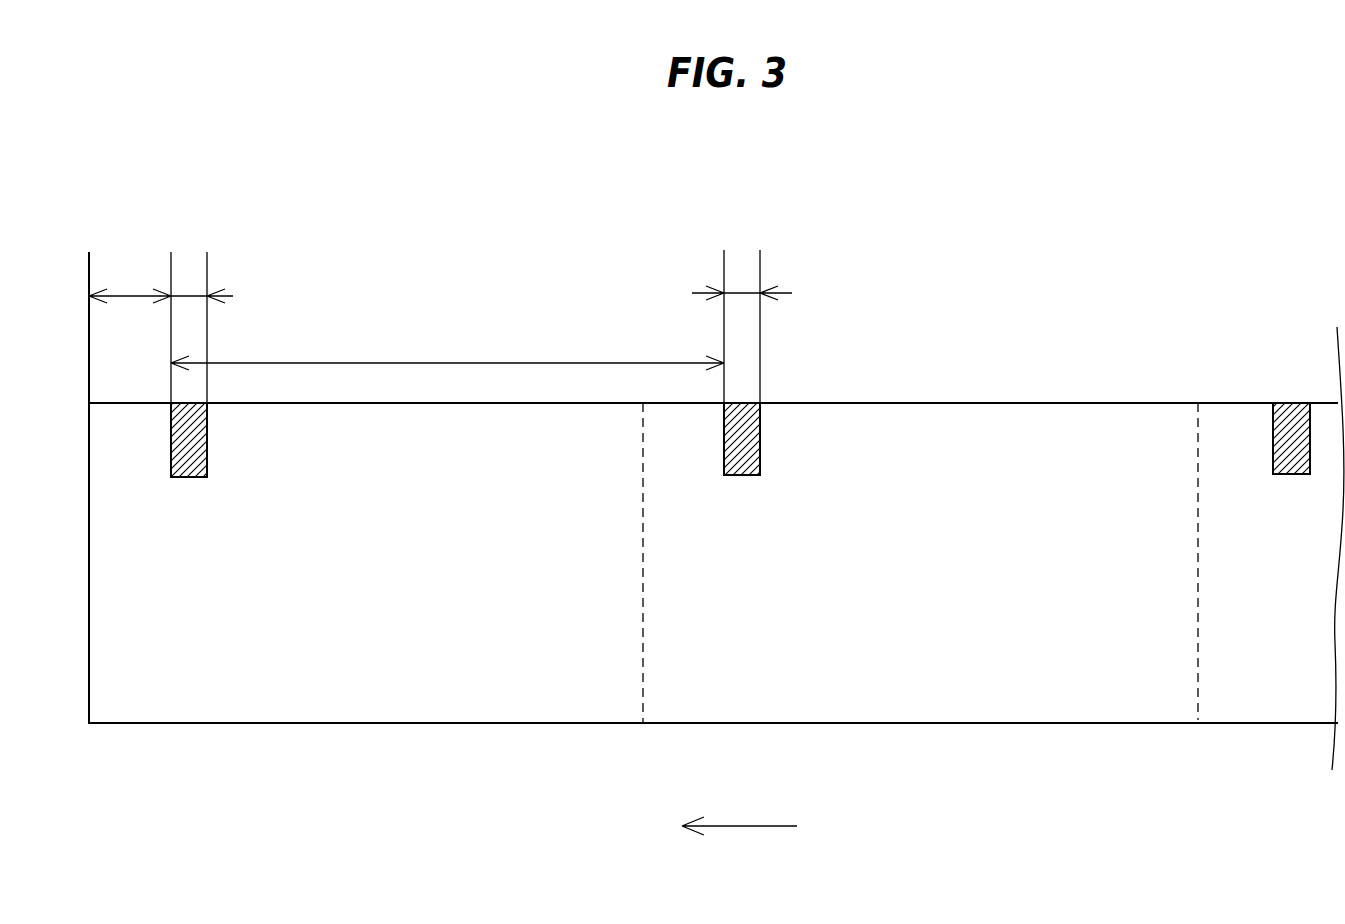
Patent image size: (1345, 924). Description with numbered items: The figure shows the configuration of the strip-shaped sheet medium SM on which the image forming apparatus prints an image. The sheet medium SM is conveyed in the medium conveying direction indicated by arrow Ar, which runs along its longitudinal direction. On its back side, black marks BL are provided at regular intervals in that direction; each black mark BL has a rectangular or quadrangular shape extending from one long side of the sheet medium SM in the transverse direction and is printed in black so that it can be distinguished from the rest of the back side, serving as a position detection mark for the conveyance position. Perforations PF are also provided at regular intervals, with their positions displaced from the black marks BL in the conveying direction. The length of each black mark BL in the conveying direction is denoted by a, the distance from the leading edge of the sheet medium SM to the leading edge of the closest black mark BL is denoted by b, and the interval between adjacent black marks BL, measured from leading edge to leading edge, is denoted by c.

The sheet medium SM is at (138, 190).
The black marks BL is at (189, 477).
The perforations PF is at (643, 688).
The length of each black mark a is at (188, 295).
The distance from leading edge of sheet medium to leading edge of first black mark b is at (129, 296).
The interval between adjacent black marks c is at (446, 363).
The arrow indicating medium conveying direction Ar is at (741, 828).